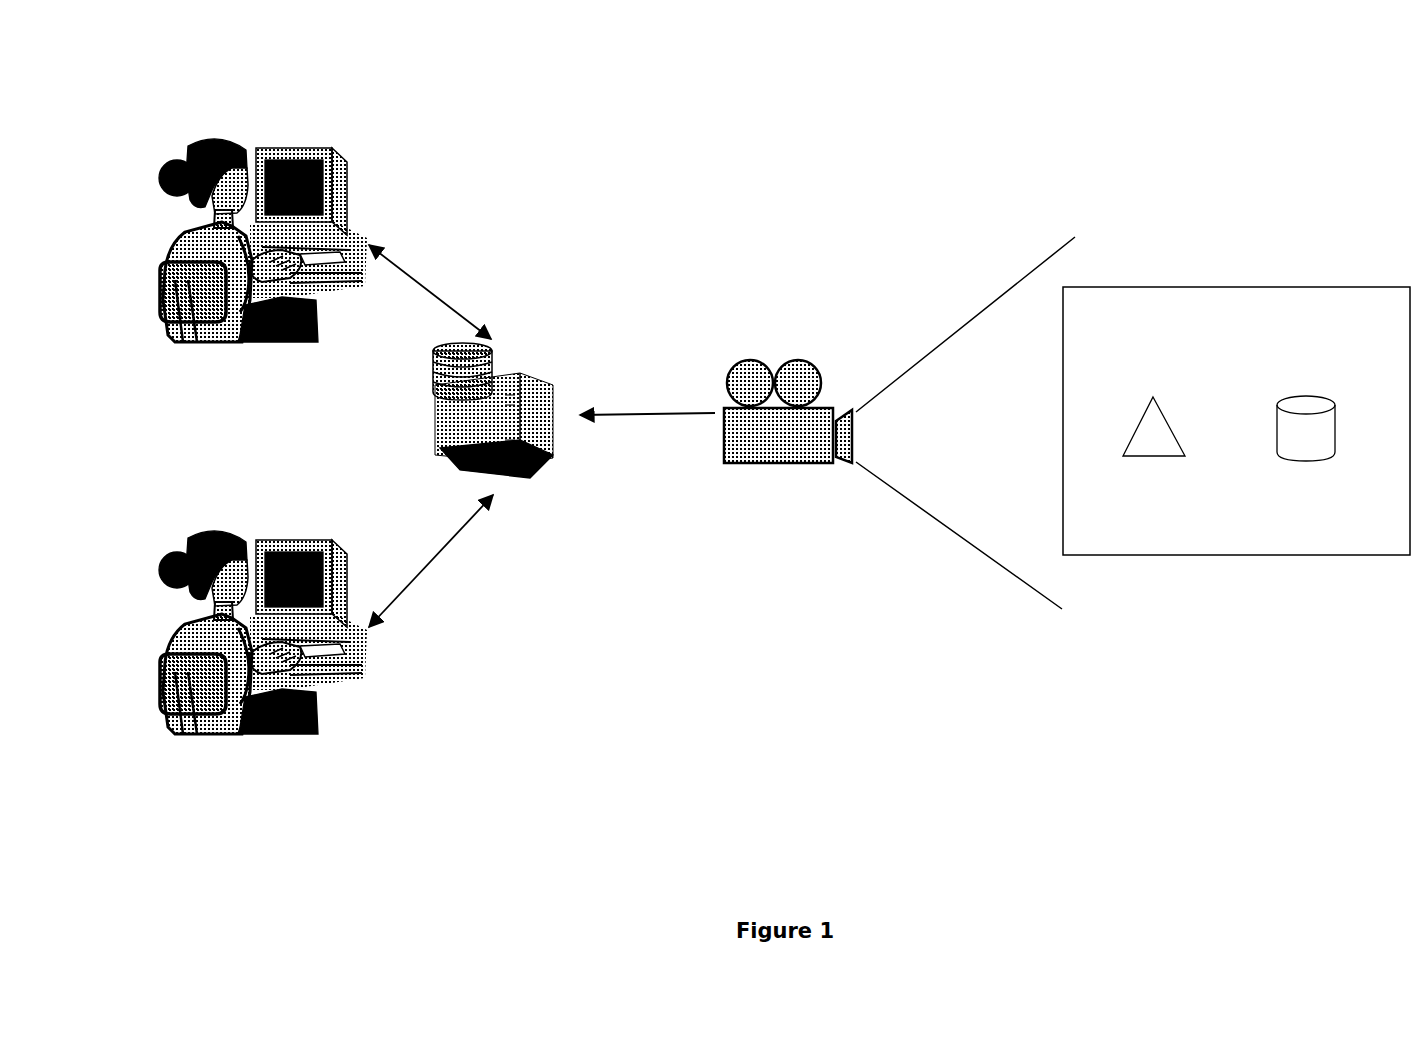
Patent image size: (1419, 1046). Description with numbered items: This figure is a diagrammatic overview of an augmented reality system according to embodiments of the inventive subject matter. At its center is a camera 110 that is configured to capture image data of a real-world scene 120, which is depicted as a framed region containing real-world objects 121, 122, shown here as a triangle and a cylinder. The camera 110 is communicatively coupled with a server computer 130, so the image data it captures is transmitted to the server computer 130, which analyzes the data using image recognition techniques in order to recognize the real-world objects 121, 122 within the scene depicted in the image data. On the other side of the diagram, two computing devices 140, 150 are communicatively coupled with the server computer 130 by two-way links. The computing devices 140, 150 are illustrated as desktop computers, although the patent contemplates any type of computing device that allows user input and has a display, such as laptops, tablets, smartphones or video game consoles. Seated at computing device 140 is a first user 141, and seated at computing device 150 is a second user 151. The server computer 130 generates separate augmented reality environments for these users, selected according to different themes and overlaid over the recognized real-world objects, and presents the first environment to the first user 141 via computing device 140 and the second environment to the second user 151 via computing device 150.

The camera 110 is at (788, 490).
The real-world scene 120 is at (1237, 560).
The real-world object 121 is at (1154, 450).
The real-world object 122 is at (1306, 450).
The server computer 130 is at (412, 415).
The computing device 140 is at (297, 141).
The first user 141 is at (223, 358).
The computing device 150 is at (297, 527).
The second user 151 is at (223, 748).